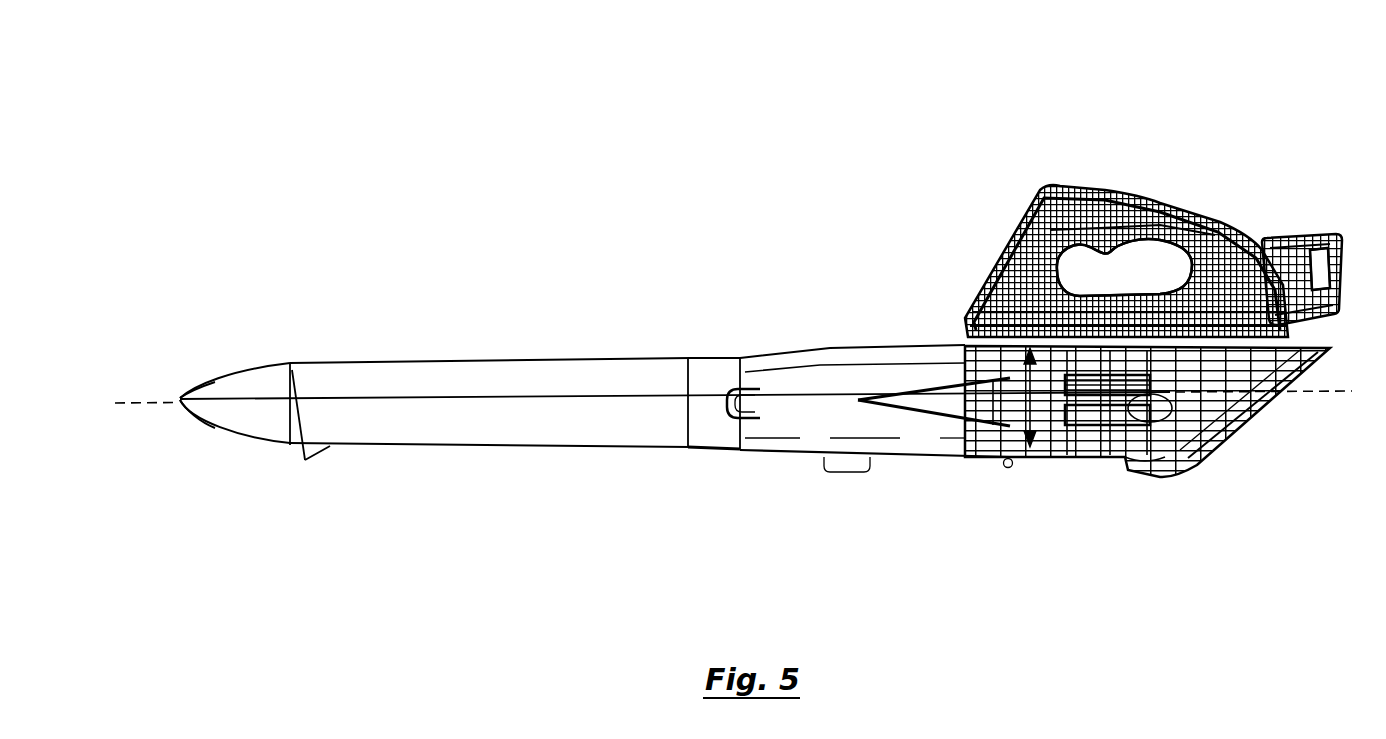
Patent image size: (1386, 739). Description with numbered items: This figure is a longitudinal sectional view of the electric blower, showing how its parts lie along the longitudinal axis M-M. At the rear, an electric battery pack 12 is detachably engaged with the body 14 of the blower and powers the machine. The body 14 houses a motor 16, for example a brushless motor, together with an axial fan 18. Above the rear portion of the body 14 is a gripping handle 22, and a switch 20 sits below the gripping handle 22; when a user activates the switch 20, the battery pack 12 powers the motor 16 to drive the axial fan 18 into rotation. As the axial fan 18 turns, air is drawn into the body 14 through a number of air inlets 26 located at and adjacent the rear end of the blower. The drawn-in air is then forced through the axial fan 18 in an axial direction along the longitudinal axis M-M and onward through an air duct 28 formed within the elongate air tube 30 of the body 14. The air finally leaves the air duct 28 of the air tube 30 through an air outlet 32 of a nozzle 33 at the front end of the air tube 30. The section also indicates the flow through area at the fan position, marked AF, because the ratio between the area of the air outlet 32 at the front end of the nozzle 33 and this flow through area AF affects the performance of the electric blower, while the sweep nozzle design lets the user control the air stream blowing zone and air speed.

The electric battery pack 12 is at (1305, 237).
The body 14 is at (828, 393).
The motor 16 is at (1062, 395).
The axial fan 18 is at (1103, 450).
The switch 20 is at (1078, 195).
The gripping handle 22 is at (1167, 198).
The air inlets 26 is at (1258, 410).
The air duct 28 is at (653, 408).
The elongate air tube 30 is at (458, 407).
The air outlet 32 is at (180, 400).
The nozzle 33 is at (260, 410).
The flow through area at fan position AF is at (1030, 402).
The longitudinal axis M is at (731, 401).